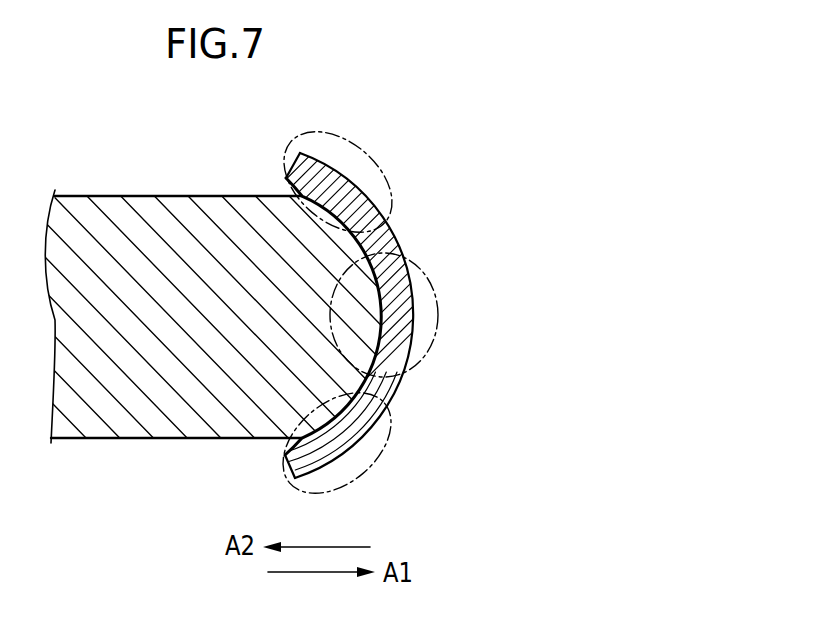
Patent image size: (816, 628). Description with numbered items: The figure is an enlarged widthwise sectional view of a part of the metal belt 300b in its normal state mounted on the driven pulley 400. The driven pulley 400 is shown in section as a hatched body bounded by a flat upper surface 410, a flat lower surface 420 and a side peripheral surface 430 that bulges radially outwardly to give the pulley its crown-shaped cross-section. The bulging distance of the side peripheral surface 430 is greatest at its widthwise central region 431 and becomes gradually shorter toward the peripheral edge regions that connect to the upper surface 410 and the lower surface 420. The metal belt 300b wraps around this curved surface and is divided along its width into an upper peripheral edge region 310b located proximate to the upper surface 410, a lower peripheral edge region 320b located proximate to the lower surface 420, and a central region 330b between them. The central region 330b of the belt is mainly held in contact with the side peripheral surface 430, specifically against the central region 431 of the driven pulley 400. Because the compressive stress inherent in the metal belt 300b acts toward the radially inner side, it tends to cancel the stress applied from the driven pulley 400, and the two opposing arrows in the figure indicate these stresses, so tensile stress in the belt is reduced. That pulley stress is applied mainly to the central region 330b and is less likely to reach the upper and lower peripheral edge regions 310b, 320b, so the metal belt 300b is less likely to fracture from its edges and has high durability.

The driven pulley 400 is at (113, 380).
The upper surface 410 is at (174, 196).
The lower surface 420 is at (202, 438).
The side peripheral surface 430 is at (378, 383).
The central region 431 is at (395, 241).
The metal belt 300b is at (453, 203).
The upper peripheral edge region 310b is at (373, 168).
The lower peripheral edge region 320b is at (372, 454).
The central region 330b is at (436, 314).